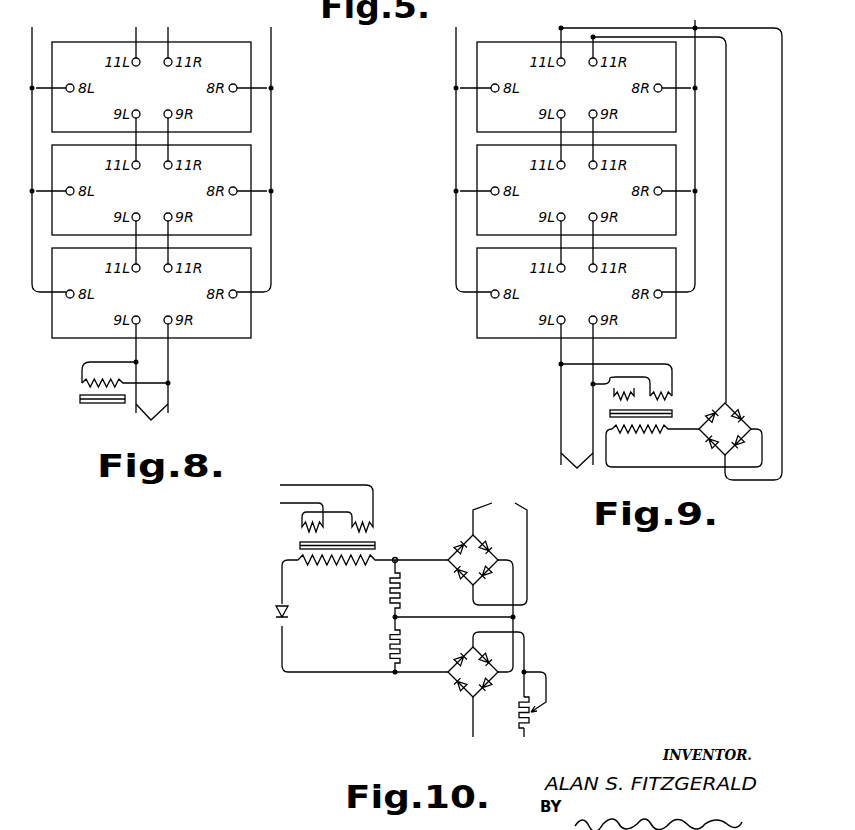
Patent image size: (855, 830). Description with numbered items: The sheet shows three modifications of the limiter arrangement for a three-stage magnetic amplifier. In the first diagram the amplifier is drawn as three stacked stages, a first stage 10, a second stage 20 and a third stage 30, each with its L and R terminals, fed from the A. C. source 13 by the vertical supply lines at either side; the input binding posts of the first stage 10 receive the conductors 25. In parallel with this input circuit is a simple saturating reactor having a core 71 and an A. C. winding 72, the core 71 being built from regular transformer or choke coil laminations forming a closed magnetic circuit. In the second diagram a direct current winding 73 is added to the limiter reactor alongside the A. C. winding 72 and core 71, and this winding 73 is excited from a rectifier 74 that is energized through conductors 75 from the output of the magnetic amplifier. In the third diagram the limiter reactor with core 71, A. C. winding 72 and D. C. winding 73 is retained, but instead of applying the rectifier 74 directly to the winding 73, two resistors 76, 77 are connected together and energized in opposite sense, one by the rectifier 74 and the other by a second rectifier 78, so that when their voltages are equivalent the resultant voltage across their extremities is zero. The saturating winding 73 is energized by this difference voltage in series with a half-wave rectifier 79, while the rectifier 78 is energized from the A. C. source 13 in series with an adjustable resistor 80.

In FIG. 8, the A. C. source 13 is at (27, 17).
In FIG. 9, the A. C. source 13 is at (451, 17).
In FIG. 10, the A. C. source 13 is at (529, 749).
In FIG. 8, the first amplifier stage 10 is at (141, 303).
In FIG. 9, the first amplifier stage 10 is at (566, 303).
In FIG. 8, the second amplifier stage 20 is at (141, 200).
In FIG. 9, the second amplifier stage 20 is at (566, 200).
In FIG. 8, the third amplifier stage 30 is at (141, 97).
In FIG. 9, the third amplifier stage 30 is at (566, 97).
In FIG. 8, the conductors 25 is at (152, 423).
In FIG. 9, the conductors 25 is at (577, 472).
In FIG. 8, the core 71 is at (87, 401).
In FIG. 9, the core 71 is at (653, 414).
In FIG. 10, the core 71 is at (350, 544).
In FIG. 8, the A. C. winding 72 is at (110, 374).
In FIG. 9, the A. C. winding 72 is at (629, 381).
In FIG. 10, the A. C. winding 72 is at (326, 508).
In FIG. 9, the direct current winding 73 is at (684, 446).
In FIG. 10, the direct current winding 73 is at (365, 613).
In FIG. 9, the rectifier 74 is at (731, 425).
In FIG. 10, the rectifier 74 is at (481, 602).
In FIG. 9, the conductors 75 is at (776, 167).
In FIG. 10, the conductors 75 is at (500, 550).
In FIG. 10, the resistor 76 is at (453, 590).
In FIG. 10, the resistor 77 is at (408, 646).
In FIG. 10, the second rectifier 78 is at (477, 664).
In FIG. 10, the half-wave rectifier 79 is at (296, 618).
In FIG. 10, the adjustable resistor 80 is at (546, 700).